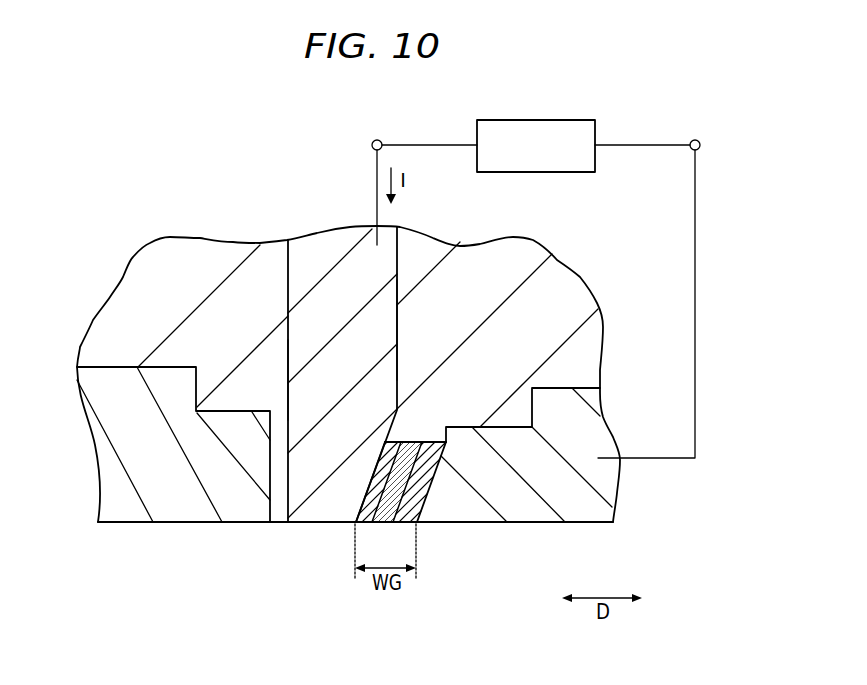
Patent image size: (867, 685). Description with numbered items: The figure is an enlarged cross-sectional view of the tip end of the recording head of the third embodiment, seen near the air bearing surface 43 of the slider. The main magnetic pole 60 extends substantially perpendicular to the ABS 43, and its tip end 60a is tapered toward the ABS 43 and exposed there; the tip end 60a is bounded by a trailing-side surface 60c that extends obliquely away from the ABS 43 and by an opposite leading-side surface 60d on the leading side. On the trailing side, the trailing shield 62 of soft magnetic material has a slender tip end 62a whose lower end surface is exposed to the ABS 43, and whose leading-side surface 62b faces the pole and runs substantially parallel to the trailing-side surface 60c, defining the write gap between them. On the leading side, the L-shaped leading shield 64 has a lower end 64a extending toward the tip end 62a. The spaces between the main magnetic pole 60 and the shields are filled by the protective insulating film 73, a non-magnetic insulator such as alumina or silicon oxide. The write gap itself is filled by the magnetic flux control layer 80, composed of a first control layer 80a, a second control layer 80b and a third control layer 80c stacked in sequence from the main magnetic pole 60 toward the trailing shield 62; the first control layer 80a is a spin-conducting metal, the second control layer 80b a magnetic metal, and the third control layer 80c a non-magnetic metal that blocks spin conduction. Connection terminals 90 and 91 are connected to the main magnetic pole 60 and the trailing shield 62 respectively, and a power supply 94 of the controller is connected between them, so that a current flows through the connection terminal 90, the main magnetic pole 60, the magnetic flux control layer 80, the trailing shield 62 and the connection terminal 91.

The connection terminal 90 is at (376, 140).
The connection terminal 91 is at (694, 140).
The power supply 94 is at (540, 172).
The main magnetic pole 60 is at (347, 233).
The tip end of the main magnetic pole 60a is at (323, 500).
The trailing-side surface 60c is at (398, 330).
The leading-side surface 60d is at (288, 377).
The protective insulating film 73 is at (568, 280).
The trailing shield 62 is at (598, 404).
The tip end of the trailing shield 62a is at (596, 505).
The leading-side surface 62b is at (422, 440).
The leading shield 64 is at (98, 440).
The lower end of the leading shield 64a is at (133, 509).
The air bearing surface 43 is at (218, 521).
The magnetic flux control layer 80 is at (448, 533).
The first control layer 80a is at (365, 510).
The second control layer 80b is at (390, 500).
The third control layer 80c is at (428, 505).